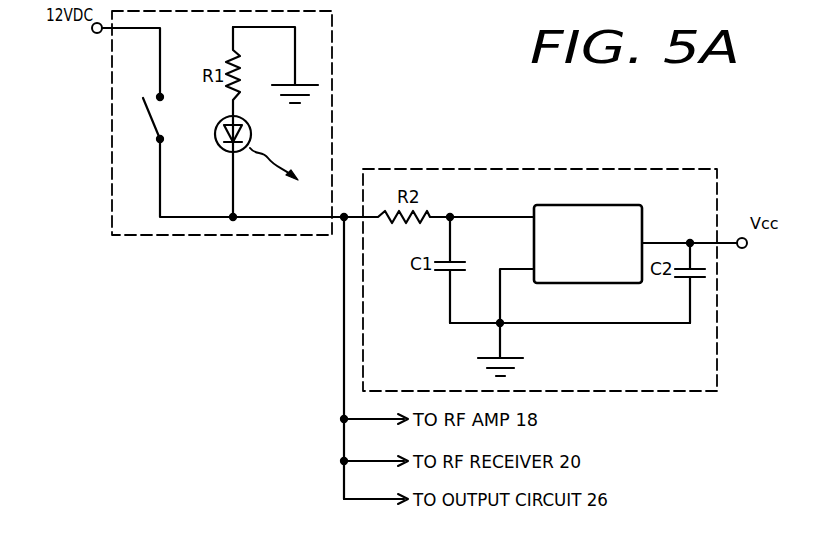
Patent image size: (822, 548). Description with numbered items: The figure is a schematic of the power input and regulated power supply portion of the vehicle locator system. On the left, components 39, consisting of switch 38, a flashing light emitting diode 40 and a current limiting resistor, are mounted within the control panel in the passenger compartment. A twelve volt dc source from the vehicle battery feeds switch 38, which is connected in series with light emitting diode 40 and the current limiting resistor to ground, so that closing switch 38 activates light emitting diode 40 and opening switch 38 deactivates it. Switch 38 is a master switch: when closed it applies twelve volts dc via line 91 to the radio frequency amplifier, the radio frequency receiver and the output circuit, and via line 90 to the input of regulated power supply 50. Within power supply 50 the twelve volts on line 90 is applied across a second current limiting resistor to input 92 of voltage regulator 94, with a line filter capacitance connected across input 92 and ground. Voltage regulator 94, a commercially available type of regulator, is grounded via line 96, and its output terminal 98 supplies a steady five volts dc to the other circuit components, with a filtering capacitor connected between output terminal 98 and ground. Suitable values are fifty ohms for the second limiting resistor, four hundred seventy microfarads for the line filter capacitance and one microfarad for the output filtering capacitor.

The switch 38 is at (147, 113).
The components 39 is at (332, 42).
The flashing light emitting diode 40 is at (256, 127).
The regulated power supply 50 is at (430, 168).
The line 90 is at (348, 212).
The line 91 is at (342, 312).
The input 92 is at (497, 214).
The voltage regulator 94 is at (602, 205).
The line 96 is at (499, 283).
The output terminal 98 is at (689, 238).